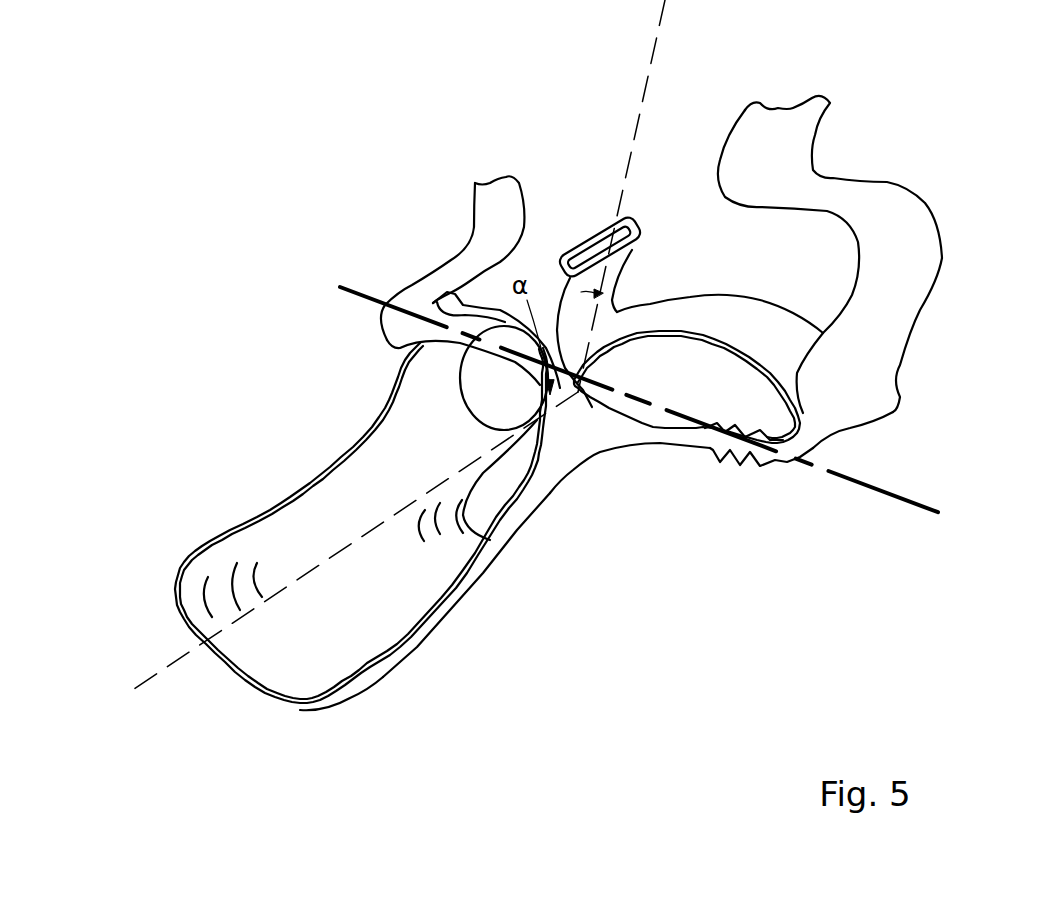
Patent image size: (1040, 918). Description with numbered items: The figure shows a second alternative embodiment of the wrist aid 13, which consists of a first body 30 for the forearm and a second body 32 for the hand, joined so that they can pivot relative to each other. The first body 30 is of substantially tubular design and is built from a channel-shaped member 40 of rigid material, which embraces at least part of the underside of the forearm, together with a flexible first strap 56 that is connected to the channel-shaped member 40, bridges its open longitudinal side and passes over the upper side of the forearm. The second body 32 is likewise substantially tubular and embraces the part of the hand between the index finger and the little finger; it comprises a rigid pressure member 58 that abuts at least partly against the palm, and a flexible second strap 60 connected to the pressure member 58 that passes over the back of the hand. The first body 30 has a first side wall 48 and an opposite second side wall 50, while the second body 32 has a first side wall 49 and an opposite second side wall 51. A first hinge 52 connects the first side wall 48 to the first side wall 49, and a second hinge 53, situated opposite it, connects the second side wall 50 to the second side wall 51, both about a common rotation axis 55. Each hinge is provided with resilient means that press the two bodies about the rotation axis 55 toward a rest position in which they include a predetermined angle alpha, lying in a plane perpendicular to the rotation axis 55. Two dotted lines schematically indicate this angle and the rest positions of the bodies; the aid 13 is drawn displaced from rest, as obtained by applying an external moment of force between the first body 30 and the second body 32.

The aid 13 is at (410, 172).
The first body 30 is at (430, 627).
The second body 32 is at (752, 313).
The channel-shaped member 40 is at (530, 513).
The first side wall 48 is at (608, 443).
The first side wall 49 is at (830, 418).
The second side wall 50 is at (413, 432).
The second side wall 51 is at (581, 292).
The first hinge 52 is at (723, 437).
The second hinge 53 is at (522, 393).
The rotation axis 55 is at (920, 510).
The first strap 56 is at (497, 328).
The pressure member 58 is at (693, 297).
The second strap 60 is at (907, 187).